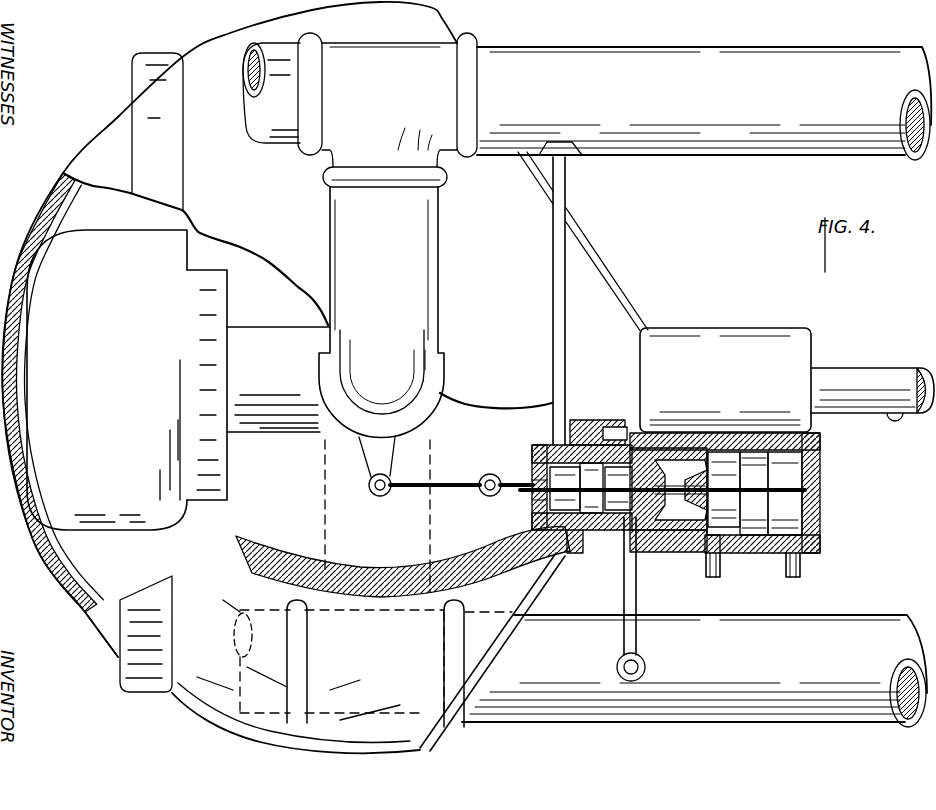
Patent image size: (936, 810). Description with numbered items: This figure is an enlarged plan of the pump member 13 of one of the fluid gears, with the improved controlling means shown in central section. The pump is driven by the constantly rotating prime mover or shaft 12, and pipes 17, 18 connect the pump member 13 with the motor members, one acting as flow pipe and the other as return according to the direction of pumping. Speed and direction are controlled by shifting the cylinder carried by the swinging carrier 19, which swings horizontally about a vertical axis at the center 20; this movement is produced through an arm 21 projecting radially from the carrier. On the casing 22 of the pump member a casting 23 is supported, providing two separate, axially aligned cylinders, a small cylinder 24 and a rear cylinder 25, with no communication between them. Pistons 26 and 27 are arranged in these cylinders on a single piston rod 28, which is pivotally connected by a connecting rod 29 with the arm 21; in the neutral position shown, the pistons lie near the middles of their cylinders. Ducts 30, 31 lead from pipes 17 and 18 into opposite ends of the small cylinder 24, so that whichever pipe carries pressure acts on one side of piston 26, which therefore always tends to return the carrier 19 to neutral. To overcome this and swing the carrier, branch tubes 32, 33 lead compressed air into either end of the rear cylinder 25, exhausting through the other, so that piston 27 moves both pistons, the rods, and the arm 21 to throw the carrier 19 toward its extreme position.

The shaft 12 is at (880, 378).
The pump member 13 is at (277, 377).
The pipe 17 is at (704, 103).
The pipe 18 is at (673, 652).
The swinging carrier 19 is at (107, 380).
The center 20 is at (332, 266).
The arm 21 is at (370, 462).
The casing 22 is at (354, 583).
The casting 23 is at (668, 507).
The small cylinder 24 is at (540, 513).
The rear cylinder 25 is at (795, 510).
The piston 26 is at (583, 552).
The rear piston 27 is at (760, 497).
The piston rod 28 is at (535, 467).
The connecting rod 29 is at (410, 495).
The duct 30 is at (552, 293).
The duct 31 is at (637, 593).
The branch tube 32 is at (719, 577).
The branch tube 33 is at (806, 578).